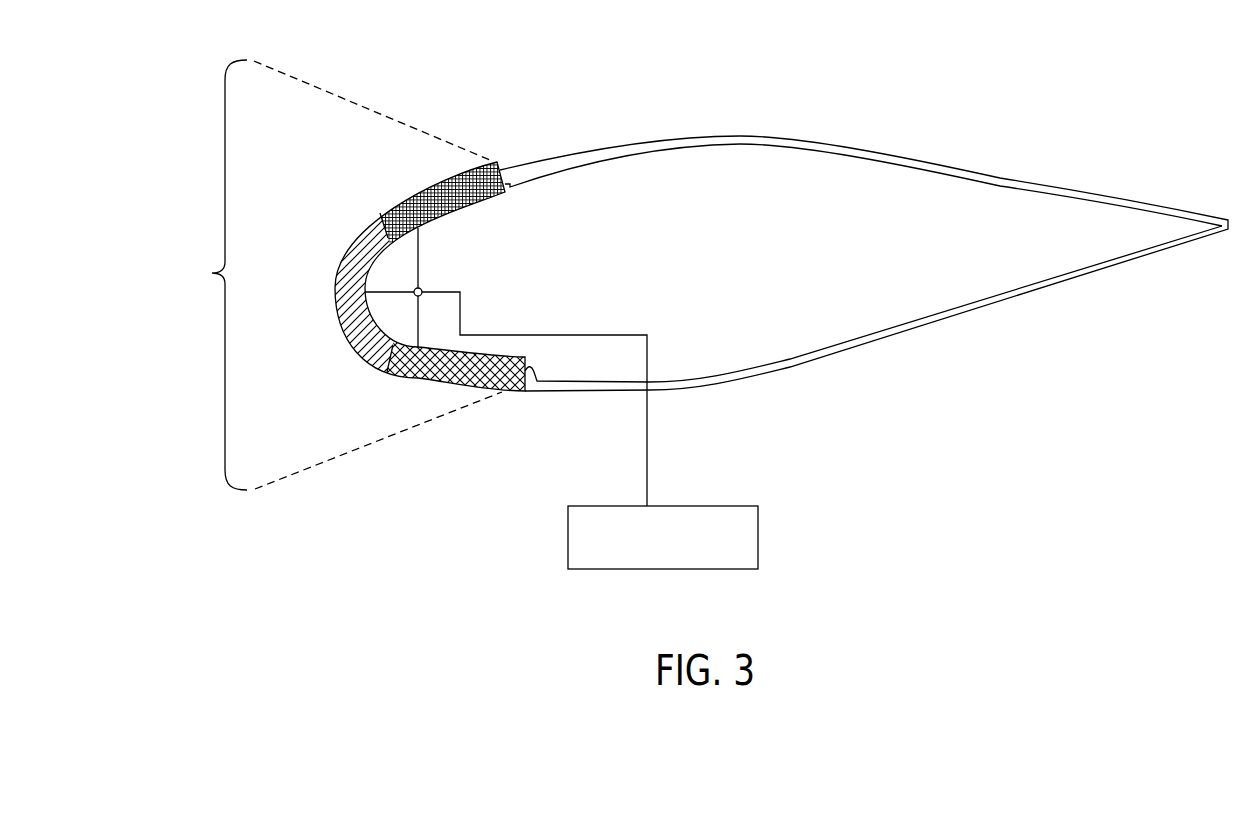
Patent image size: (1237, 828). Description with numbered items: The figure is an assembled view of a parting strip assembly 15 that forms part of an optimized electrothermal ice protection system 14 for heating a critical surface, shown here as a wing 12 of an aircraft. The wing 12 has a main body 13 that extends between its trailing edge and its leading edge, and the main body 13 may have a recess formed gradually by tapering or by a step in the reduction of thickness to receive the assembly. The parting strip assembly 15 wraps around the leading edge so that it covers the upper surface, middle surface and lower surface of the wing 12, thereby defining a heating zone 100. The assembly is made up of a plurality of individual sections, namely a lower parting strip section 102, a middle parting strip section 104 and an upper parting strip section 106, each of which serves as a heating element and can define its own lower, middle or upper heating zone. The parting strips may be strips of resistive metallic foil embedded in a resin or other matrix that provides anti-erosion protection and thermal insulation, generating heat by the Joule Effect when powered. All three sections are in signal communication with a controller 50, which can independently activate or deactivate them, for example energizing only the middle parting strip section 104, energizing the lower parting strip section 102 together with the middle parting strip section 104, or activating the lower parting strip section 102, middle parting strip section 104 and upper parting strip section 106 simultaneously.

The critical surface 12 is at (864, 223).
The main body 13 is at (893, 174).
The electrothermal ice protection system 14 is at (381, 258).
The parting strip assembly 15 is at (333, 307).
The controller 50 is at (758, 535).
The heating zone 100 is at (349, 275).
The lower parting strip section 102 is at (413, 372).
The middle parting strip section 104 is at (345, 251).
The upper parting strip section 106 is at (407, 203).